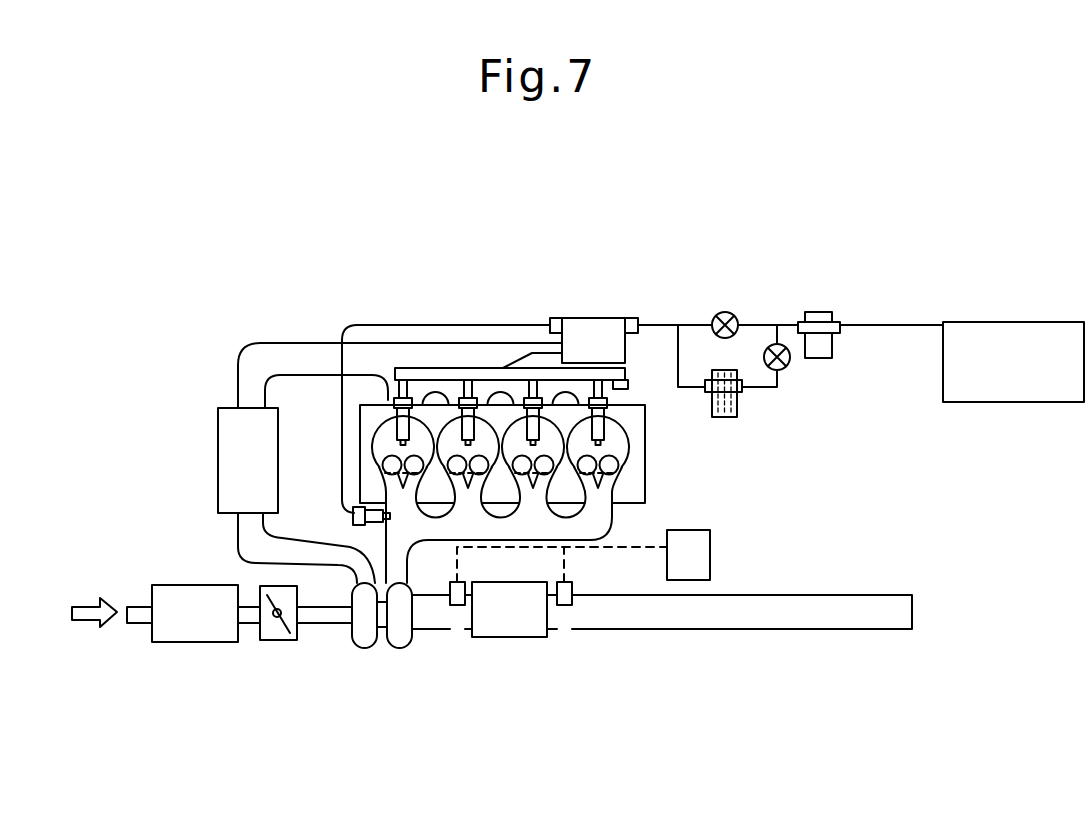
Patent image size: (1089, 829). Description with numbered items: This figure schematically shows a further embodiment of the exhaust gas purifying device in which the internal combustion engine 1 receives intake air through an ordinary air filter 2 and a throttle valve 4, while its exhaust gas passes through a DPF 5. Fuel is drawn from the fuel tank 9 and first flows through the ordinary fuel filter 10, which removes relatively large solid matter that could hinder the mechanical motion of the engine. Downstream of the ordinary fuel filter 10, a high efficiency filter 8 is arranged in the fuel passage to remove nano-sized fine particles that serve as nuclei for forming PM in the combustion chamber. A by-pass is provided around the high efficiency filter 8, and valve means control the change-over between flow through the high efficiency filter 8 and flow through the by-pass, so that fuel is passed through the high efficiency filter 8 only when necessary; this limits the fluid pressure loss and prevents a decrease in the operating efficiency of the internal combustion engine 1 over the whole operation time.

The internal combustion engine 1 is at (647, 463).
The ordinary air filter 2 is at (187, 642).
The throttle valve 4 is at (277, 642).
The DPF 5 is at (503, 637).
The high efficiency filter 8 is at (737, 407).
The fuel tank 9 is at (985, 321).
The ordinary fuel filter 10 is at (813, 311).